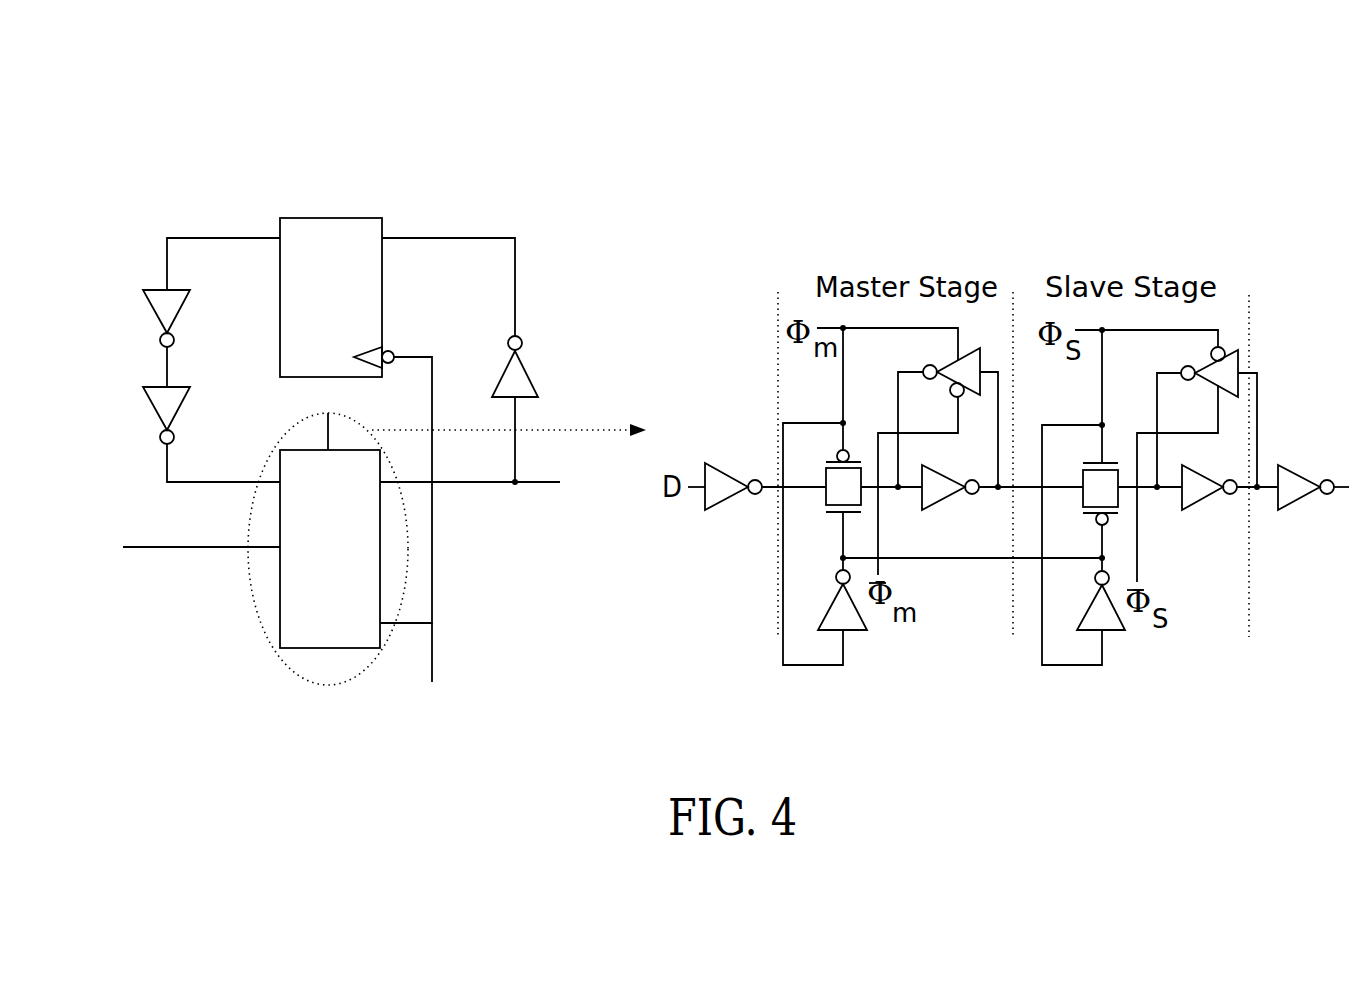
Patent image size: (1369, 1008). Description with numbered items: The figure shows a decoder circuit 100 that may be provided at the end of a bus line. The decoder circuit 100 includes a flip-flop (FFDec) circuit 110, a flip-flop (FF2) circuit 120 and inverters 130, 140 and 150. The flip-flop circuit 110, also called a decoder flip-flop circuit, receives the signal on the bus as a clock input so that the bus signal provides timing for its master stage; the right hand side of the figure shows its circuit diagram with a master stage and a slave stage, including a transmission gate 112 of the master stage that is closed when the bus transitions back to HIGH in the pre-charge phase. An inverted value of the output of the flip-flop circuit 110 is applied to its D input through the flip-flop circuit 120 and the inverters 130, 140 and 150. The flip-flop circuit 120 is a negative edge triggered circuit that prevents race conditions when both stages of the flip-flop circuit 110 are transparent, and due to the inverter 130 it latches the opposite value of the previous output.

The decoder circuit 100 is at (245, 150).
The flip-flop (FFDec) circuit 110 is at (298, 633).
The transmission gate 112 is at (832, 495).
The flip-flop (FF2) circuit 120 is at (327, 237).
The inverter 130 is at (527, 370).
The inverter 140 is at (150, 313).
The inverter 150 is at (152, 408).